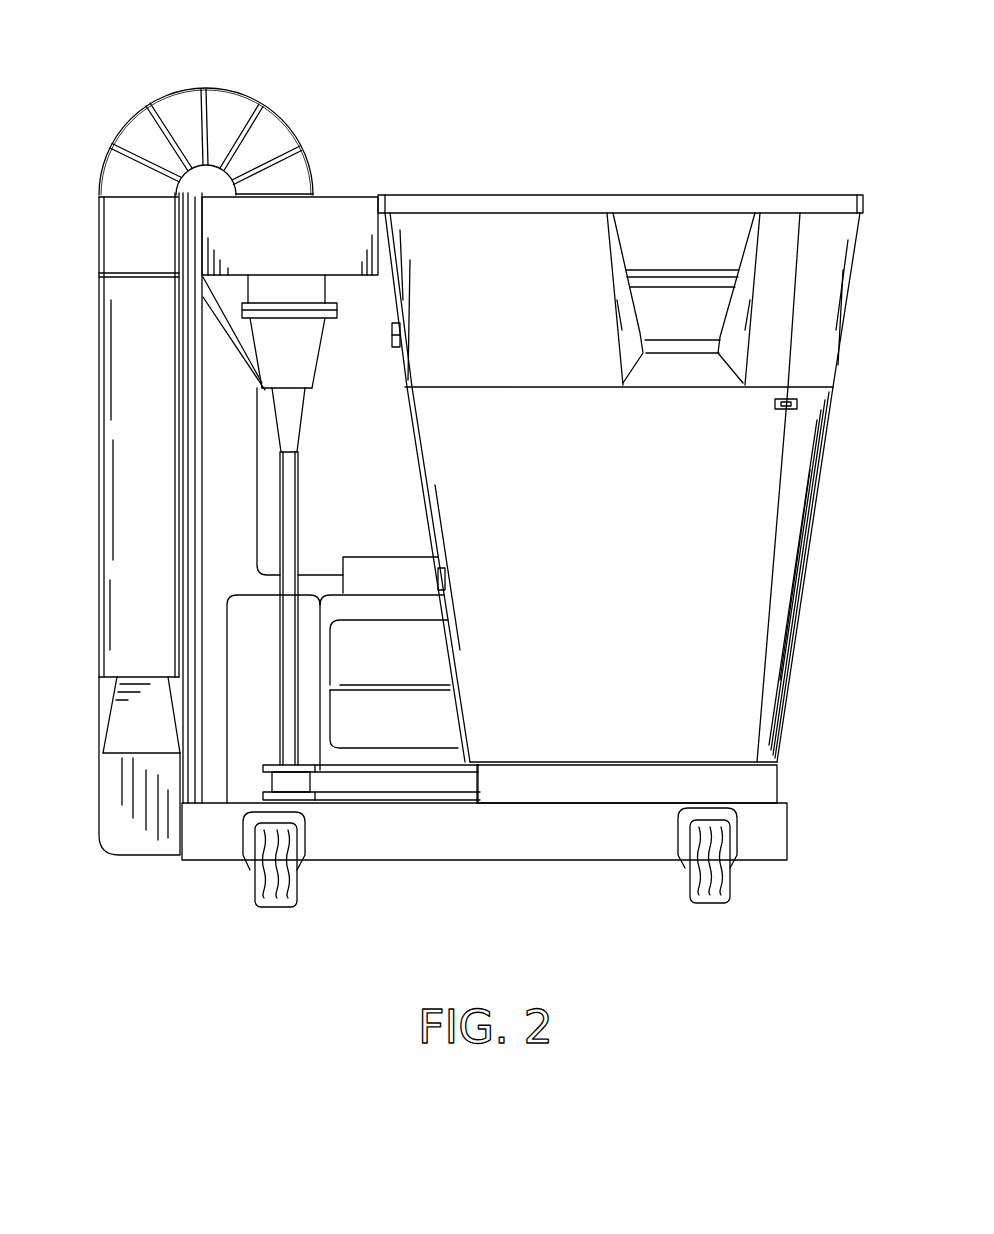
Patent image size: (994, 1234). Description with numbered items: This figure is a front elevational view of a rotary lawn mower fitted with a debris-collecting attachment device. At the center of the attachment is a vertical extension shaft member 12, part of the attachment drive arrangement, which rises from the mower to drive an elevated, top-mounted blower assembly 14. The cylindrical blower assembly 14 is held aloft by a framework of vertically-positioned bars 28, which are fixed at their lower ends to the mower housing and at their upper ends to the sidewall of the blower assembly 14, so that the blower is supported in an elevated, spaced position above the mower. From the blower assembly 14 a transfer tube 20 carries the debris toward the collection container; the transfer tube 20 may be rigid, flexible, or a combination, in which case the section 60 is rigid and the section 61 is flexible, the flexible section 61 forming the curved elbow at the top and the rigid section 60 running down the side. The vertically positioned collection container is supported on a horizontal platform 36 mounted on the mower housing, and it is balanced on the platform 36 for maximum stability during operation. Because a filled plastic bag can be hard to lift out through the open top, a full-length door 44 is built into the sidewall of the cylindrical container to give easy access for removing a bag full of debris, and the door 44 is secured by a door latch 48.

The vertical extension shaft member 12 is at (300, 508).
The blower assembly 14 is at (297, 250).
The transfer tube 20 is at (162, 390).
The vertically-positioned bars 28 is at (198, 505).
The horizontal platform 36 is at (763, 780).
The full-length door 44 is at (750, 573).
The door latch 48 is at (773, 412).
The rigid section 60 is at (102, 467).
The flexible section 61 is at (232, 92).